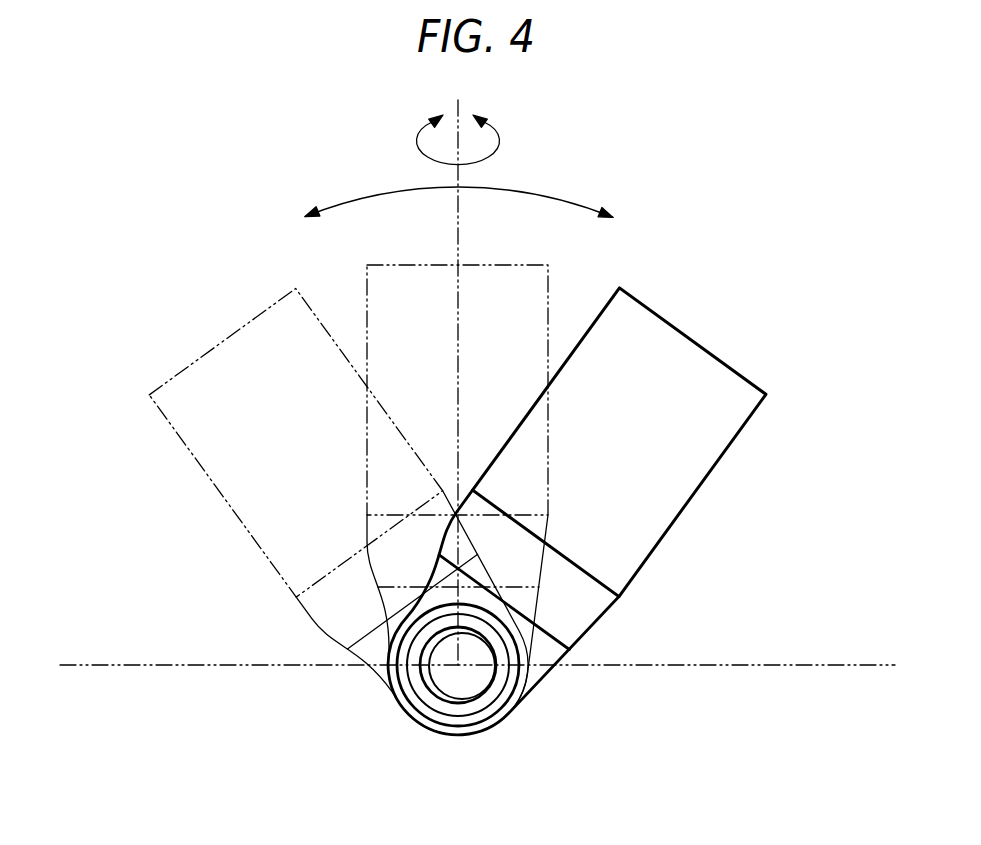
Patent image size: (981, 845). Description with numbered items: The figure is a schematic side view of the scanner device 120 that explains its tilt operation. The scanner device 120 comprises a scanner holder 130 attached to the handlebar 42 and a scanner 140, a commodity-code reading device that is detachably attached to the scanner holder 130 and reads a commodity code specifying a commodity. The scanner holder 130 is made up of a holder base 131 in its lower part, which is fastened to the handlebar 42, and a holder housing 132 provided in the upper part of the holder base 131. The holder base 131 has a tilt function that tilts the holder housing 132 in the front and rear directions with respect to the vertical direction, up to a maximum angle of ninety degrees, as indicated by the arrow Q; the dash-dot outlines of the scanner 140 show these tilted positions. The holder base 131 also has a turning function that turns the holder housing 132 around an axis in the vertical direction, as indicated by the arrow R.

The scanner device 120 is at (682, 328).
The scanner holder 130 is at (542, 675).
The holder base 131 is at (428, 712).
The holder housing 132 is at (545, 642).
The scanner 140 is at (367, 294).
The handlebar 42 is at (462, 677).
The arrow R is at (498, 138).
The arrow Q is at (547, 195).